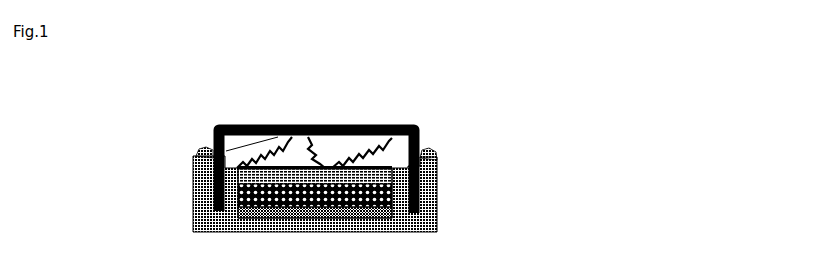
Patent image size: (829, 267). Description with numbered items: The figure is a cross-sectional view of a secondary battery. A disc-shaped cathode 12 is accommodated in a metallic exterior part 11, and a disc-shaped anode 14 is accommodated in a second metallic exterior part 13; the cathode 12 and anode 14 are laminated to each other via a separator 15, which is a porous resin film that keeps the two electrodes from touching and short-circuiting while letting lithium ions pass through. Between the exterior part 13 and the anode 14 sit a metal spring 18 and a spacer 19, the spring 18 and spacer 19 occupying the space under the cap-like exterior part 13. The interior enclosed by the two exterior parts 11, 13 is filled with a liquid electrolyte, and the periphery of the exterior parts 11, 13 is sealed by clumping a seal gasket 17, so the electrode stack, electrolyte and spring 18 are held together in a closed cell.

The exterior part 11 is at (195, 198).
The cathode 12 is at (283, 198).
The exterior part 13 is at (213, 138).
The anode 14 is at (283, 170).
The separator 15 is at (357, 216).
The seal gasket 17 is at (418, 155).
The metal spring 18 is at (213, 148).
The spacer 19 is at (302, 170).